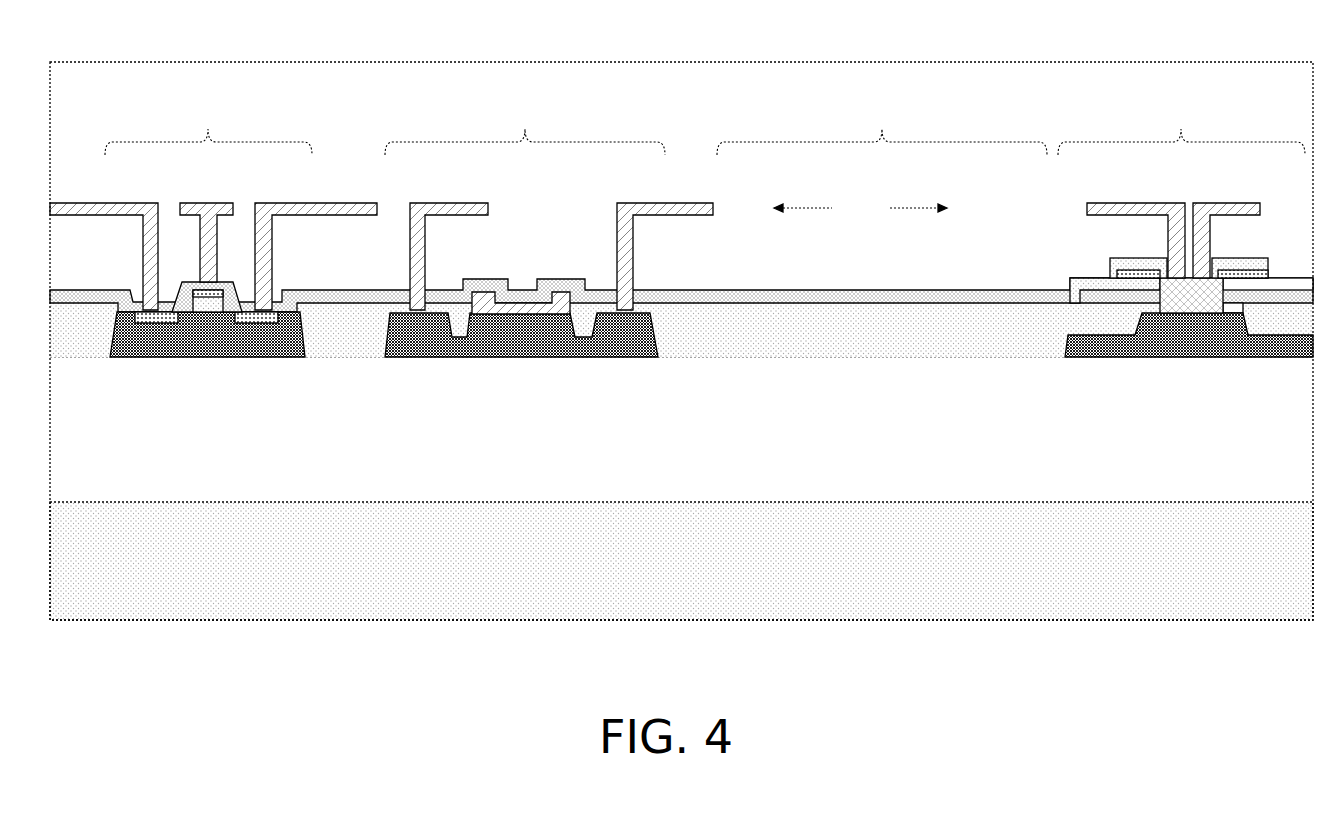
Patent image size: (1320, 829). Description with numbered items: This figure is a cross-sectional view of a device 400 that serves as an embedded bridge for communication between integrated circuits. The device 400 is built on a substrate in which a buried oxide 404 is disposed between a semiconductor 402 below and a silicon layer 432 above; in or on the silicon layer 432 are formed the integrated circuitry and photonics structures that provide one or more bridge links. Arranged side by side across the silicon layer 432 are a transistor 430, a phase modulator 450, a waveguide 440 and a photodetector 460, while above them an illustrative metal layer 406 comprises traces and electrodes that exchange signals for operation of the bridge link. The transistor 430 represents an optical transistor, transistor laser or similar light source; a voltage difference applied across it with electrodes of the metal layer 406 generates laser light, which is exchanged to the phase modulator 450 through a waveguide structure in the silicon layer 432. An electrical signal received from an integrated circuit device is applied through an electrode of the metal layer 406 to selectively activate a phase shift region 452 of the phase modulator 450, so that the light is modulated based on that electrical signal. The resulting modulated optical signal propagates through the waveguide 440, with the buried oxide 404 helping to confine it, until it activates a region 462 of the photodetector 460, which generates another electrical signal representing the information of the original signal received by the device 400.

The device 400 is at (1224, 58).
The semiconductor 402 is at (787, 573).
The buried oxide 404 is at (1293, 470).
The metal layer 406 is at (860, 208).
The transistor 430 is at (213, 228).
The silicon layer 432 is at (840, 332).
The waveguide 440 is at (882, 128).
The phase modulator 450 is at (549, 254).
The phase shift region 452 is at (510, 328).
The photodetector 460 is at (1185, 254).
The region 462 is at (1164, 337).